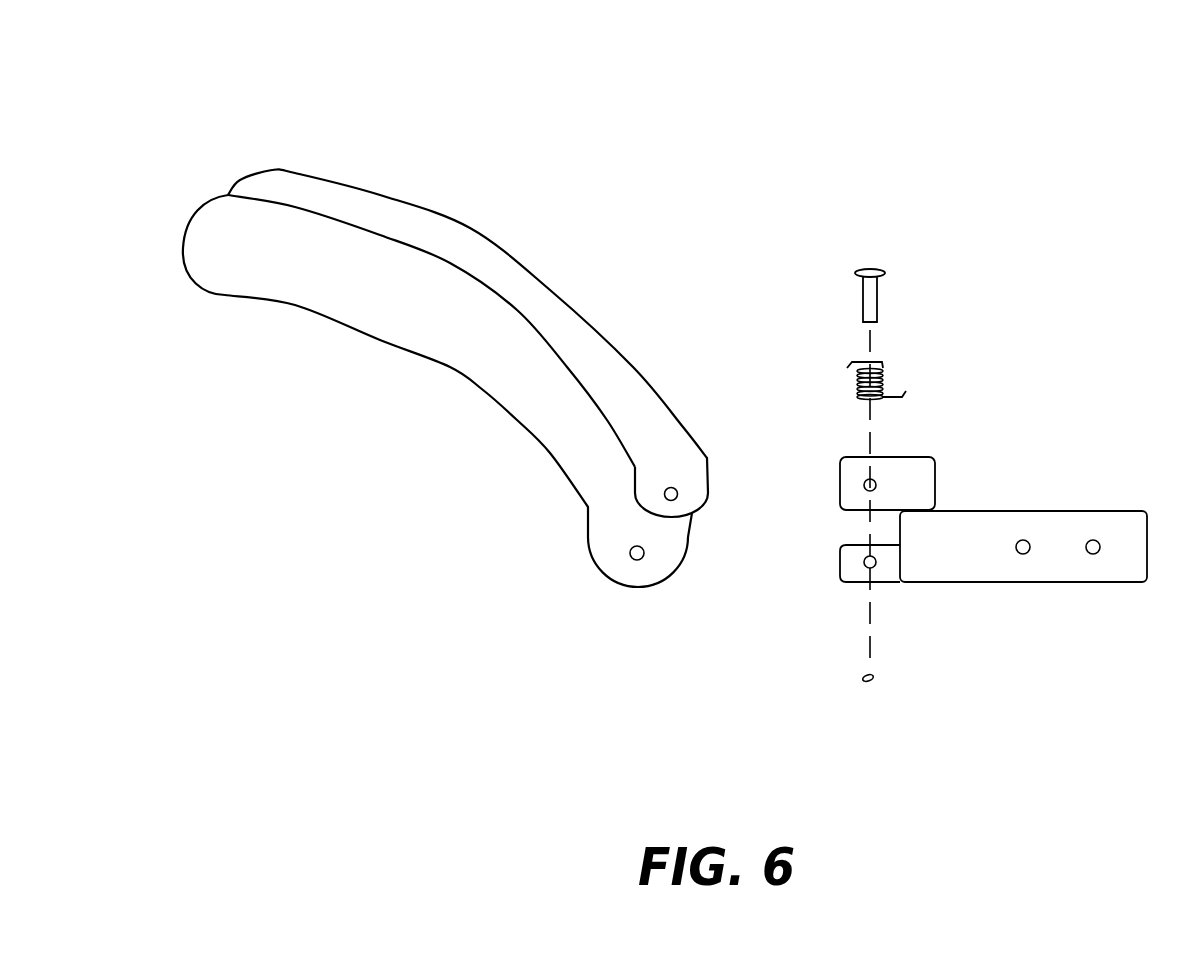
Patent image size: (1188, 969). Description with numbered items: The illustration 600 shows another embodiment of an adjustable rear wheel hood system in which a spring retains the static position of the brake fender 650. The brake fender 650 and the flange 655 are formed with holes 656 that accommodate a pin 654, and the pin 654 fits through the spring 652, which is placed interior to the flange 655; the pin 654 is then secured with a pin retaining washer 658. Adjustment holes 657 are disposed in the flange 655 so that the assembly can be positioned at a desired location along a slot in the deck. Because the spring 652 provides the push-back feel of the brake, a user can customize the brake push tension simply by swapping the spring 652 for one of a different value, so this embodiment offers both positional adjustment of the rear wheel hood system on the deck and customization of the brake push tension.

The illustration 600 is at (233, 70).
The brake fender 650 is at (398, 338).
The spring 652 is at (883, 387).
The pin 654 is at (880, 300).
The flange 655 is at (1033, 448).
The holes 656 is at (865, 567).
The adjustment holes 657 is at (1092, 555).
The pin retaining washer 658 is at (855, 678).